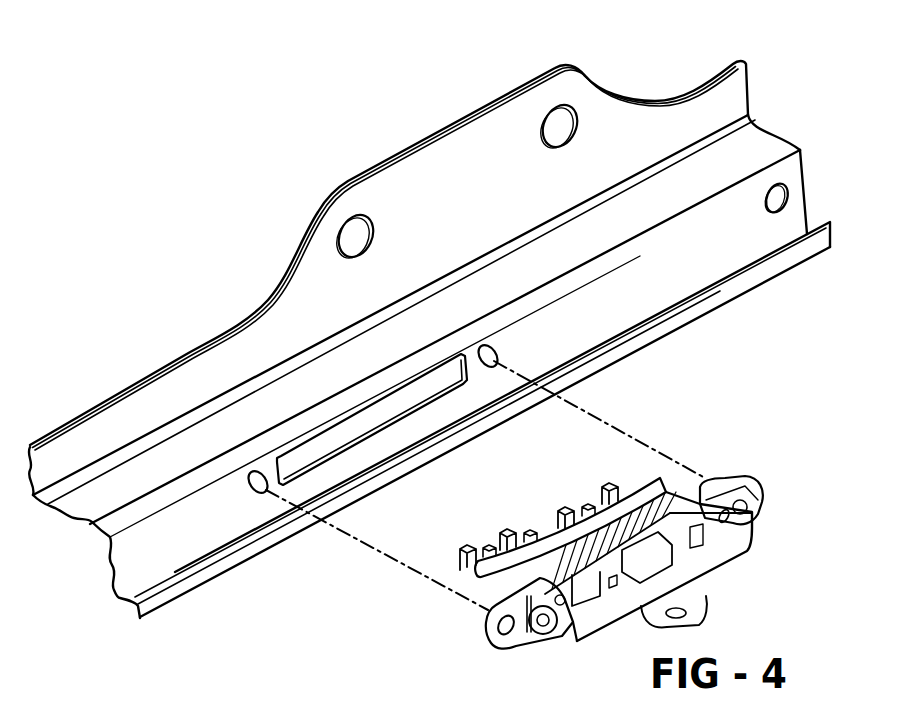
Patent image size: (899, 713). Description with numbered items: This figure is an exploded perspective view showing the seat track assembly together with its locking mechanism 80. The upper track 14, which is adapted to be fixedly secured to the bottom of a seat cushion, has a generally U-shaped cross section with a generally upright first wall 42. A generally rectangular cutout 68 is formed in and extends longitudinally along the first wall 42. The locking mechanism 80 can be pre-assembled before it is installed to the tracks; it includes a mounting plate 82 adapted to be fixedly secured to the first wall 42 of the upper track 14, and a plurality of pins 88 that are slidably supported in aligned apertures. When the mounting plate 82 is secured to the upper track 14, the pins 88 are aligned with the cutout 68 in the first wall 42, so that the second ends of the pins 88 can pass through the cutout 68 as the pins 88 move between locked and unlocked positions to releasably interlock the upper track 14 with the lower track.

The upper track 14 is at (701, 100).
The first wall 42 is at (803, 192).
The cutout 68 is at (353, 448).
The locking mechanism 80 is at (639, 529).
The mounting plate 82 is at (690, 502).
The pins 88 is at (556, 508).